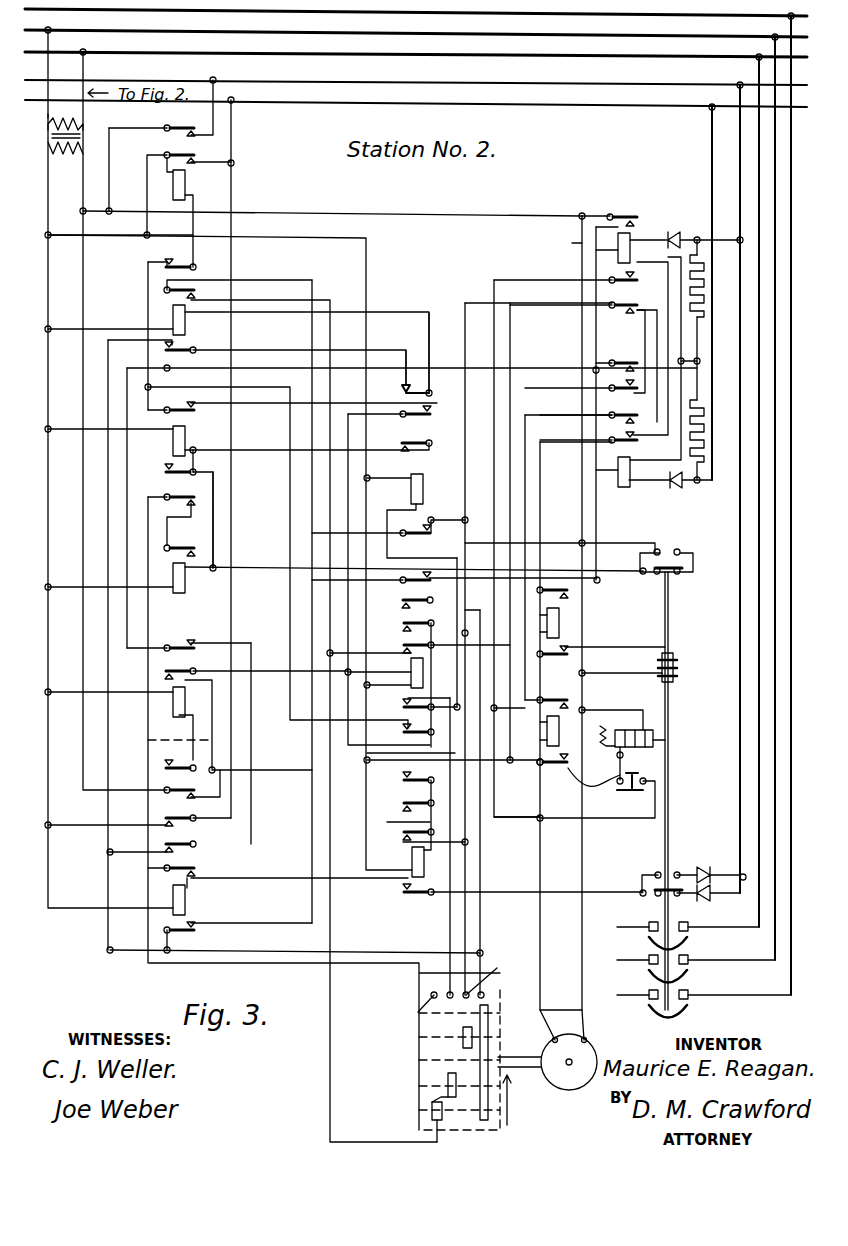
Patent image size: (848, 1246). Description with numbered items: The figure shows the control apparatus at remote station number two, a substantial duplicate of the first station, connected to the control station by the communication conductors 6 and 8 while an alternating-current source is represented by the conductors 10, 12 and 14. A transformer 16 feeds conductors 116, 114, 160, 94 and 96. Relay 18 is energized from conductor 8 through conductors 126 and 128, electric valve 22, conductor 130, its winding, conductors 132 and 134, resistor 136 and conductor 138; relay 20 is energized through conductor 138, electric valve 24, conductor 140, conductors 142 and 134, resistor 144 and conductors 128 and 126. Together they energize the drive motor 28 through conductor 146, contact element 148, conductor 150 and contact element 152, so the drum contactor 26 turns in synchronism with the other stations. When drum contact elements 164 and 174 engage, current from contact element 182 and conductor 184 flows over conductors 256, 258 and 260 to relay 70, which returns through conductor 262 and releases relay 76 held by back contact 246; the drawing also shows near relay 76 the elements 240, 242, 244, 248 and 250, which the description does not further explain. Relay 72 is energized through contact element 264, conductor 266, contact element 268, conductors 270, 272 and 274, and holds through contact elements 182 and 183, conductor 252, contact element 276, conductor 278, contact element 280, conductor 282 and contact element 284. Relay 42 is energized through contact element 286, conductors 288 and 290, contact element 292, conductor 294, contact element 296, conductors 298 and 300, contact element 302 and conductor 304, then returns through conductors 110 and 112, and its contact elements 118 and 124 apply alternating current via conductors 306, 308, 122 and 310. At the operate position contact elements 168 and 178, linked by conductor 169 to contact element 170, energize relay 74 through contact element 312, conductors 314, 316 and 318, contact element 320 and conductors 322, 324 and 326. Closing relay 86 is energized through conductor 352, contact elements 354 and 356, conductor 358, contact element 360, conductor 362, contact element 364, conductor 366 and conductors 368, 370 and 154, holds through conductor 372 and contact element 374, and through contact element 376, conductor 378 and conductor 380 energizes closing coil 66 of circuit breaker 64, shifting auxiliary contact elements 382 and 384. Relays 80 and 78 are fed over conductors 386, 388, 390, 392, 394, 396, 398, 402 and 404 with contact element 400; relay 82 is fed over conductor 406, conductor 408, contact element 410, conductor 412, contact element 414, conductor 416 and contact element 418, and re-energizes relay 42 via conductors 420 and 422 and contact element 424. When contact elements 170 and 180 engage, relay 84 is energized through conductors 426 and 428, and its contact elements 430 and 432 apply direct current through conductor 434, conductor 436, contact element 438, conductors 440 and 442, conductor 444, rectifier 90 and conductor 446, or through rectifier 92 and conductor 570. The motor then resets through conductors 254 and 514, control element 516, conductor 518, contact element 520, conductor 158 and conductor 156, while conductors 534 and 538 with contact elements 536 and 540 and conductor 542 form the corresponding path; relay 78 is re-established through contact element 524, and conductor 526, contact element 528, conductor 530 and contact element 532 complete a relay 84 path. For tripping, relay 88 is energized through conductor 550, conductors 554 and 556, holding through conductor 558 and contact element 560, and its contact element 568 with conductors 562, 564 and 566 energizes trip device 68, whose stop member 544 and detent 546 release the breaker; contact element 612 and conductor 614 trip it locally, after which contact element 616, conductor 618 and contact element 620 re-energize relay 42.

The conductor 6 is at (313, 100).
The conductor 8 is at (375, 84).
The alternating-current source conductor 10 is at (240, 52).
The alternating-current source conductor 12 is at (290, 37).
The alternating-current source conductor 14 is at (378, 14).
The transformer 16 is at (112, 120).
The relay 18 is at (613, 245).
The relay 20 is at (625, 472).
The electric valve 22 is at (680, 234).
The electric valve 24 is at (685, 487).
The drum contactor 26 is at (330, 1058).
The drum contactor drive motor 28 is at (582, 1050).
The relay 42 is at (193, 218).
The circuit breaker 64 is at (704, 971).
The closing coil 66 is at (682, 666).
The trip device 68 is at (622, 753).
The relay 70 is at (430, 488).
The relay 72 is at (430, 685).
The relay 74 is at (431, 828).
The relay 76 is at (195, 320).
The relay 78 is at (195, 441).
The relay 80 is at (195, 578).
The relay 82 is at (242, 726).
The relay 84 is at (193, 896).
The closing relay 86 is at (561, 623).
The relay 88 is at (561, 731).
The rectifier 90 is at (705, 870).
The rectifier 92 is at (708, 897).
The conductor 94 is at (403, 211).
The conductor 96 is at (567, 243).
The conductor 110 is at (165, 172).
The conductor 112 is at (147, 170).
The conductor 114 is at (303, 238).
The conductor 116 is at (50, 192).
The contact element 118 is at (183, 156).
The conductor 122 is at (112, 135).
The contact element 124 is at (190, 126).
The conductor 126 is at (740, 170).
The conductor 128 is at (718, 238).
The conductor 130 is at (650, 235).
The conductor 132 is at (660, 247).
The conductor 134 is at (705, 360).
The resistor 136 is at (703, 435).
The conductor 138 is at (710, 150).
The conductor 140 is at (652, 482).
The conductor 142 is at (668, 460).
The resistor 144 is at (703, 298).
The conductor 146 is at (598, 856).
The contact element 148 is at (625, 355).
The conductor 150 is at (596, 322).
The contact element 152 is at (634, 214).
The conductor 154 is at (512, 765).
The conductor 156 is at (560, 836).
The conductor 158 is at (130, 650).
The conductor 160 is at (80, 210).
The contact element 164 is at (488, 1027).
The operate contact element 168 is at (448, 1078).
The conductor 169 is at (440, 1098).
The contact element 170 is at (435, 1125).
The contact element 174 is at (482, 968).
The operate contact element 178 is at (418, 1012).
The contact element 180 is at (432, 994).
The contact element 182 is at (498, 1008).
The contact element 183 is at (497, 968).
The conductor 184 is at (490, 1040).
The contact 240 is at (180, 370).
The contact 242 is at (192, 350).
The conductor 244 is at (270, 345).
The back contact element 246 is at (405, 395).
The conductor 248 is at (405, 313).
The conductor 250 is at (115, 329).
The conductor 252 is at (482, 935).
The conductor 254 is at (388, 948).
The conductor 256 is at (466, 550).
The conductor 258 is at (455, 520).
The conductor 260 is at (426, 505).
The conductor 262 is at (398, 472).
The contact element 264 is at (614, 305).
The conductor 266 is at (645, 330).
The contact element 268 is at (622, 390).
The conductor 270 is at (548, 410).
The conductor 272 is at (425, 627).
The conductor 274 is at (400, 684).
The contact element 276 is at (425, 604).
The conductor 278 is at (390, 552).
The contact element 280 is at (405, 508).
The conductor 282 is at (403, 625).
The contact element 284 is at (403, 618).
The contact element 286 is at (167, 788).
The conductor 288 is at (220, 800).
The conductor 290 is at (312, 765).
The contact element 292 is at (405, 782).
The conductor 294 is at (432, 784).
The contact element 296 is at (405, 735).
The conductor 298 is at (312, 742).
The conductor 300 is at (148, 287).
The contact element 302 is at (185, 262).
The conductor 304 is at (193, 235).
The conductor 306 is at (236, 150).
The conductor 308 is at (218, 163).
The conductor 310 is at (231, 120).
The contact element 312 is at (403, 646).
The conductor 314 is at (370, 655).
The conductor 316 is at (272, 300).
The conductor 318 is at (450, 923).
The contact element 320 is at (405, 708).
The conductor 322 is at (443, 712).
The conductor 324 is at (256, 545).
The conductor 326 is at (405, 820).
The conductor 352 is at (405, 843).
The contact element 354 is at (405, 833).
The contact element 356 is at (405, 803).
The conductor 358 is at (512, 822).
The contact element 360 is at (628, 275).
The conductor 362 is at (665, 262).
The contact element 364 is at (620, 440).
The conductor 366 is at (575, 500).
The conductor 368 is at (543, 657).
The conductor 370 is at (510, 678).
The conductor 372 is at (493, 606).
The contact element 374 is at (562, 585).
The contact element 376 is at (568, 648).
The conductor 378 is at (632, 647).
The conductor 380 is at (630, 670).
The auxiliary contact element 382 is at (642, 890).
The auxiliary contact element 384 is at (657, 552).
The conductor 386 is at (66, 587).
The conductor 388 is at (260, 571).
The conductor 390 is at (693, 565).
The conductor 392 is at (677, 552).
The conductor 394 is at (66, 429).
The conductor 396 is at (258, 450).
The conductor 398 is at (195, 460).
The contact element 400 is at (170, 475).
The conductor 402 is at (213, 488).
The conductor 404 is at (640, 560).
The conductor 406 is at (66, 692).
The conductor 408 is at (190, 728).
The contact element 410 is at (187, 762).
The conductor 412 is at (150, 730).
The contact element 414 is at (170, 496).
The conductor 416 is at (172, 520).
The contact element 418 is at (172, 548).
The conductor 420 is at (367, 762).
The conductor 422 is at (312, 728).
The contact element 424 is at (185, 668).
The conductor 426 is at (165, 890).
The conductor 428 is at (148, 868).
The contact element 430 is at (192, 868).
The contact element 432 is at (170, 815).
The conductor 434 is at (88, 825).
The conductor 436 is at (275, 878).
The contact element 438 is at (418, 895).
The conductor 440 is at (520, 893).
The conductor 442 is at (655, 874).
The conductor 444 is at (680, 872).
The conductor 446 is at (735, 875).
The conductor 514 is at (155, 852).
The control element 516 is at (175, 842).
The conductor 518 is at (245, 844).
The contact element 520 is at (170, 645).
The contact element 524 is at (422, 443).
The conductor 526 is at (562, 543).
The contact element 528 is at (426, 520).
The conductor 530 is at (312, 528).
The contact element 532 is at (190, 289).
The conductor 534 is at (160, 940).
The contact element 536 is at (195, 936).
The conductor 538 is at (285, 928).
The contact element 540 is at (420, 580).
The conductor 542 is at (600, 582).
The movable stop member 544 is at (655, 728).
The detent 546 is at (665, 748).
The conductor 550 is at (700, 372).
The conductor 554 is at (553, 442).
The conductor 556 is at (545, 722).
The conductor 558 is at (545, 745).
The contact element 560 is at (558, 700).
The conductor 562 is at (618, 710).
The conductor 564 is at (580, 800).
The conductor 566 is at (578, 780).
The contact element 568 is at (565, 768).
The conductor 570 is at (680, 910).
The contact element 612 is at (630, 795).
The conductor 614 is at (650, 820).
The contact element 616 is at (408, 420).
The conductor 618 is at (348, 405).
The contact element 620 is at (192, 413).